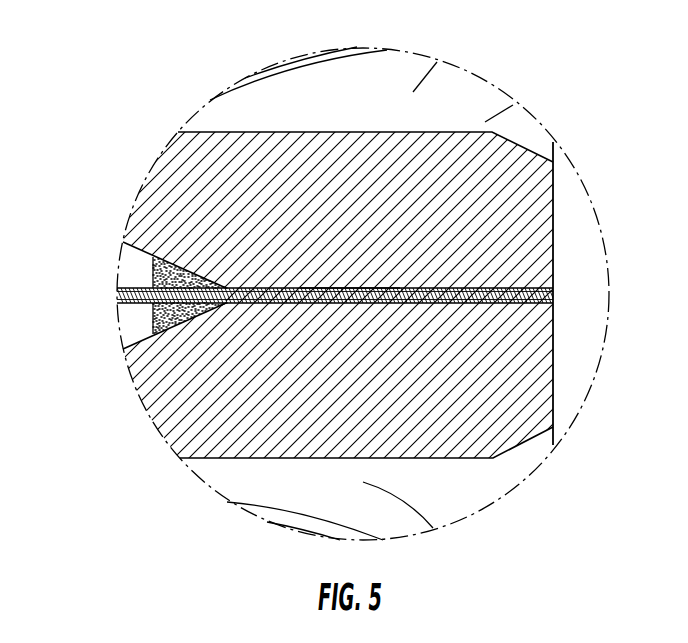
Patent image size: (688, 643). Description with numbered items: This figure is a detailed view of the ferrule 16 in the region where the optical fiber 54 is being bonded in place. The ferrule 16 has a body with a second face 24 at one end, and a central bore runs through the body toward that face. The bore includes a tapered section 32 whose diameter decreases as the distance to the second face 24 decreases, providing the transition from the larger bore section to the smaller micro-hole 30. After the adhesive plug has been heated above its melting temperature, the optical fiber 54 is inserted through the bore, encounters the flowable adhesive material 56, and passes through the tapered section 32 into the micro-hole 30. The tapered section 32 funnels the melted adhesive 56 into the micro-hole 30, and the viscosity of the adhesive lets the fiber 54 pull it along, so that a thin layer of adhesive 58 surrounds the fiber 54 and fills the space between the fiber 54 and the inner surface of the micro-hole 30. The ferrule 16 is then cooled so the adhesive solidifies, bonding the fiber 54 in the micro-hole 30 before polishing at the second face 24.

The ferrule 16 is at (462, 163).
The second face 24 is at (554, 233).
The micro-hole 30 is at (504, 297).
The tapered section 32 is at (148, 253).
The optical fiber 54 is at (121, 293).
The flowable adhesive material 56 is at (155, 333).
The thin layer of adhesive 58 is at (338, 288).